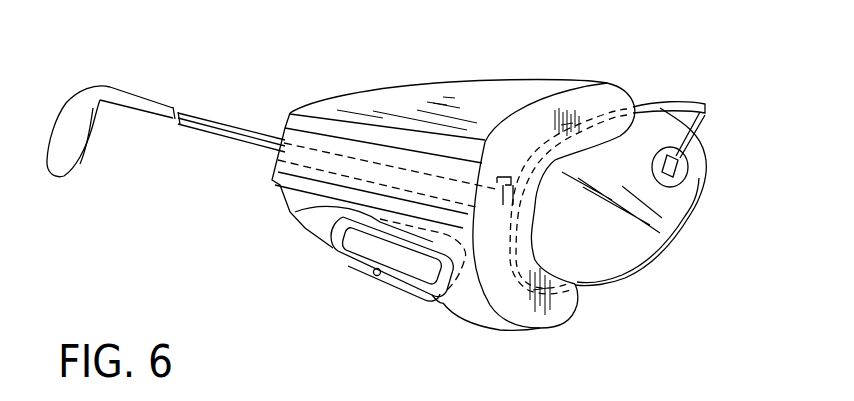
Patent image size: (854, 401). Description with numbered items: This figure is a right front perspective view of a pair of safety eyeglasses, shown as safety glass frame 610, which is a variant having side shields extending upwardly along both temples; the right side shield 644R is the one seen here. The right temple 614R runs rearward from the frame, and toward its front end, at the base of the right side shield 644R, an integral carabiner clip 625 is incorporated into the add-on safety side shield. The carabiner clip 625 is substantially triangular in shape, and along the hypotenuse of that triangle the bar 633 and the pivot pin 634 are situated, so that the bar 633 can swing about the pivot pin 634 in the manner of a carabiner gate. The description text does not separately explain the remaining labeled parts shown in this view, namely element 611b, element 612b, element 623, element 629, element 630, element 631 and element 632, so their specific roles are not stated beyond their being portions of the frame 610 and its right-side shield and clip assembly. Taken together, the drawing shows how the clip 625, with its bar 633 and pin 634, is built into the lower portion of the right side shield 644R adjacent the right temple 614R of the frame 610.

The safety glass frame 610 is at (655, 76).
The nose pad tab 611b is at (697, 120).
The eye cup face 612b is at (612, 246).
The right temple 614R is at (203, 116).
The ear hook 623 is at (78, 145).
The carabiner clip 625 is at (426, 307).
The support plate 629 is at (308, 213).
The bracket 630 is at (362, 250).
The bracket end 631 is at (340, 229).
The housing lower edge 632 is at (438, 303).
The bar 633 is at (405, 292).
The pivot pin 634 is at (373, 273).
The right side shield 644R is at (565, 310).